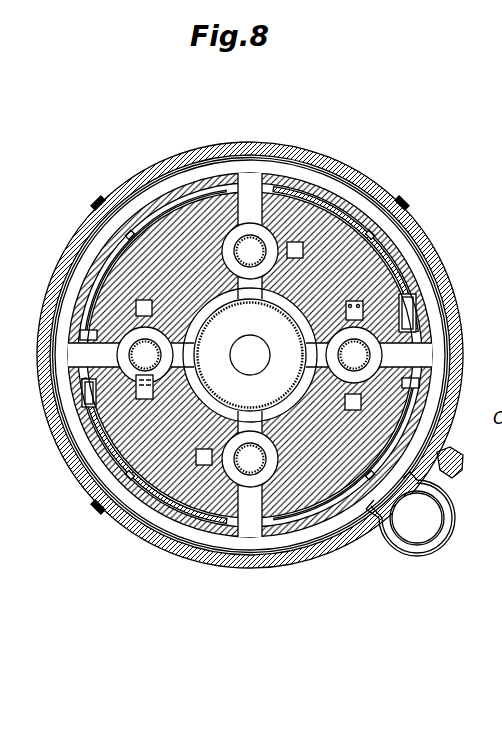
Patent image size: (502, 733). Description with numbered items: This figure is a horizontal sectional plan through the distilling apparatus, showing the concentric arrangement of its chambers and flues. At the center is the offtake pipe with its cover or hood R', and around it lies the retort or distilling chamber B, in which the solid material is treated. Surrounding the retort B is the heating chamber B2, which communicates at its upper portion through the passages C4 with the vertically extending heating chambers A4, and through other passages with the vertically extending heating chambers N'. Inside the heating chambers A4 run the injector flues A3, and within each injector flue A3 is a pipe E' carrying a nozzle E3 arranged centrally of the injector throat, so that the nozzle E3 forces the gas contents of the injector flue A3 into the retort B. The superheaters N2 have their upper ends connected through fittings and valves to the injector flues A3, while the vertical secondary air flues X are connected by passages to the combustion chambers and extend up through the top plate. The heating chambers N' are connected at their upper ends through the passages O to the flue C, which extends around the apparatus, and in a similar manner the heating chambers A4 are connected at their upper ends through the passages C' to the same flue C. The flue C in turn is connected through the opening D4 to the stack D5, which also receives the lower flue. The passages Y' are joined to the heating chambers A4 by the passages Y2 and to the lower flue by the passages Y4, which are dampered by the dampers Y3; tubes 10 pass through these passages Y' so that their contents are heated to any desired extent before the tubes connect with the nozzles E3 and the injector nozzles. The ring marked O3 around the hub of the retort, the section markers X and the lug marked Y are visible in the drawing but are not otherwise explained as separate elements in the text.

The flue C is at (250, 355).
The tubes 10 is at (398, 220).
The passages Y' is at (240, 355).
The passages Y2 is at (405, 330).
The dampers Y3 is at (407, 318).
The passages Y4 is at (402, 298).
The passages C' is at (242, 355).
The passages O is at (254, 574).
The nozzles E3 is at (133, 357).
The pipes E' is at (399, 351).
The retort B is at (250, 355).
The heating chamber B2 is at (288, 320).
The hub bearing ring O3 is at (250, 282).
The cover or hood R' is at (250, 355).
The passages C4 is at (182, 354).
The heating chambers N' is at (249, 364).
The superheaters N2 is at (176, 574).
The injector flues A3 is at (362, 355).
The heating chambers A4 is at (358, 373).
The secondary air flues X is at (248, 353).
The opening D4 is at (410, 514).
The stack D5 is at (428, 548).
The lug Y is at (450, 462).